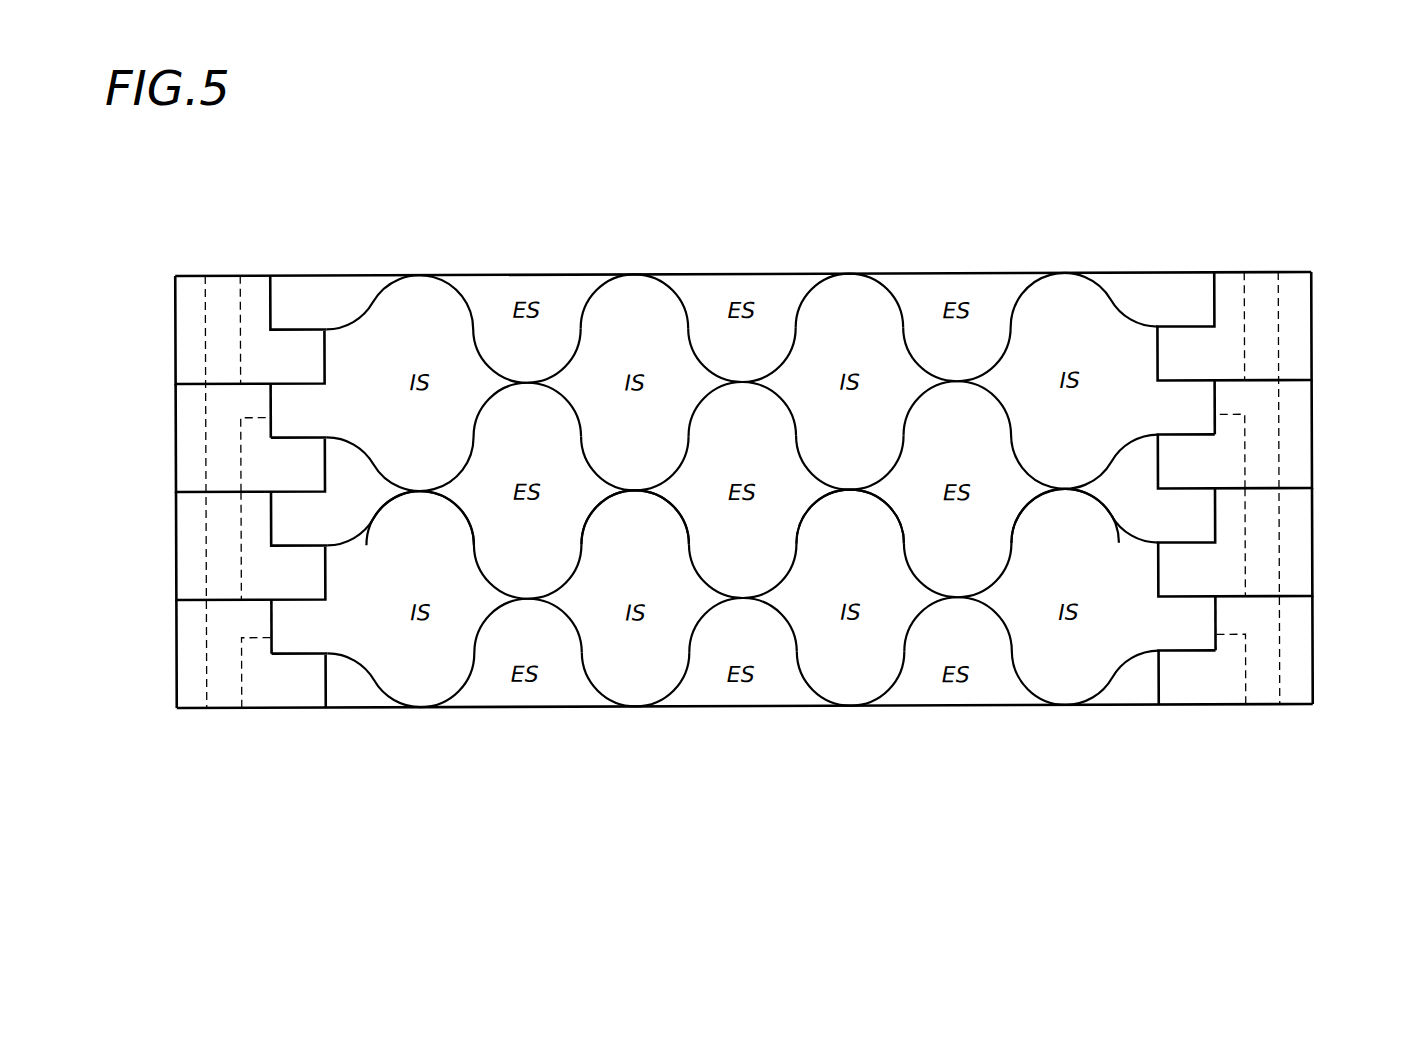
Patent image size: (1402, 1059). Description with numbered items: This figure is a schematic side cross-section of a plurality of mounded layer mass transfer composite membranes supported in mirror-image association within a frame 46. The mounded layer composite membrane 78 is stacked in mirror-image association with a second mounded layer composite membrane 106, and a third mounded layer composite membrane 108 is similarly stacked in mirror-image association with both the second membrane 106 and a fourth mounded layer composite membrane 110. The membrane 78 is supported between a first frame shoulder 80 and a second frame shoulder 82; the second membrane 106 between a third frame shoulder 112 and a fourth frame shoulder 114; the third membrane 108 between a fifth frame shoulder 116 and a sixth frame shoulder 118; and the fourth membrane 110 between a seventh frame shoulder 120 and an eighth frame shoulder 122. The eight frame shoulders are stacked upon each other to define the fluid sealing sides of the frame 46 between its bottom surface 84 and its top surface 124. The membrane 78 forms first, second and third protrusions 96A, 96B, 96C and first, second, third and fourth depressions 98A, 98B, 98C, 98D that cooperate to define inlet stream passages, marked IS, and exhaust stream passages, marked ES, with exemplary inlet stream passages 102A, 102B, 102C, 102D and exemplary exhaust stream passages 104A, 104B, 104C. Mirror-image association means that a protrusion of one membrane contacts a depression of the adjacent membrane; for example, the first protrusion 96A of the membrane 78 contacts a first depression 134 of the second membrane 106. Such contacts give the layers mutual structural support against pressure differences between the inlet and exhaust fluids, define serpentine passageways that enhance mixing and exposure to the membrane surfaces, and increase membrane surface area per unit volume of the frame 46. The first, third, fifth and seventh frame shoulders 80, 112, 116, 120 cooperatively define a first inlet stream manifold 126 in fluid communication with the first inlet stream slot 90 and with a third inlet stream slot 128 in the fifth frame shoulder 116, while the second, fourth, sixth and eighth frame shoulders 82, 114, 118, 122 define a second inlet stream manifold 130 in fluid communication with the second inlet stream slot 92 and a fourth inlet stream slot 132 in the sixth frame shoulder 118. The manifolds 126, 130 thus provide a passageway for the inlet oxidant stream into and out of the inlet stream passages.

The frame 46 is at (350, 237).
The mounded layer composite membrane 78 is at (462, 690).
The first frame shoulder 80 is at (282, 686).
The second frame shoulder 82 is at (1201, 704).
The bottom surface 84 is at (925, 713).
The first inlet stream slot 90 is at (277, 620).
The second inlet stream slot 92 is at (1207, 621).
The first protrusion 96A is at (527, 602).
The second protrusion 96B is at (742, 603).
The third protrusion 96C is at (957, 604).
The first depression 98A is at (393, 699).
The second depression 98B is at (670, 699).
The third depression 98C is at (824, 702).
The fourth depression 98D is at (1102, 698).
The inlet stream passage 102A is at (420, 582).
The inlet stream passage 102B is at (635, 581).
The inlet stream passage 102C is at (850, 581).
The inlet stream passage 102D is at (1065, 581).
The exhaust stream passage 104A is at (550, 686).
The exhaust stream passage 104B is at (765, 687).
The exhaust stream passage 104C is at (981, 688).
The second mounded layer composite membrane 106 is at (353, 540).
The third mounded layer composite membrane 108 is at (353, 444).
The fourth mounded layer composite membrane 110 is at (352, 324).
The third frame shoulder 112 is at (193, 569).
The fourth frame shoulder 114 is at (1294, 552).
The fifth frame shoulder 116 is at (193, 459).
The sixth frame shoulder 118 is at (1293, 405).
The seventh frame shoulder 120 is at (193, 346).
The eighth frame shoulder 122 is at (1296, 298).
The top surface 124 is at (740, 276).
The first inlet stream manifold 126 is at (221, 269).
The third inlet stream slot 128 is at (277, 402).
The second inlet stream manifold 130 is at (1258, 270).
The fourth inlet stream slot 132 is at (1207, 395).
The first depression 134 is at (528, 601).